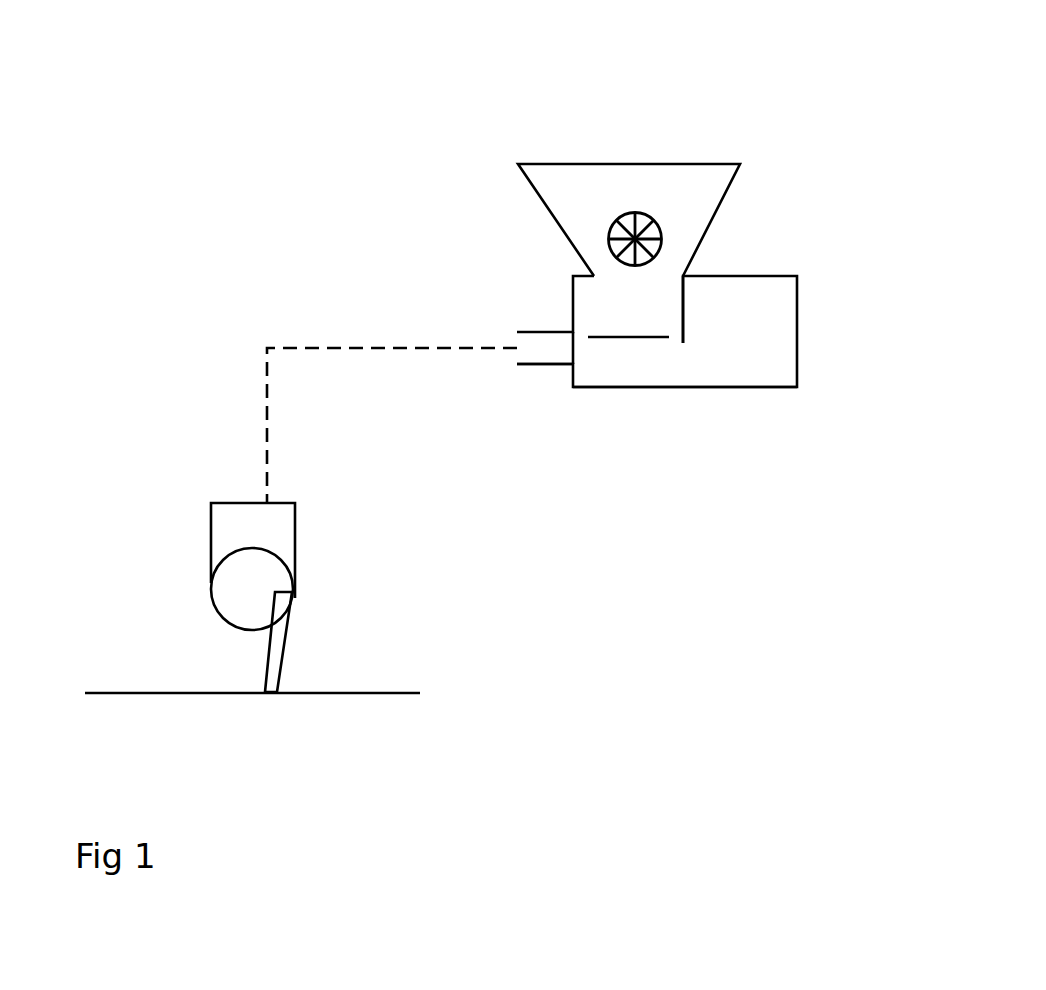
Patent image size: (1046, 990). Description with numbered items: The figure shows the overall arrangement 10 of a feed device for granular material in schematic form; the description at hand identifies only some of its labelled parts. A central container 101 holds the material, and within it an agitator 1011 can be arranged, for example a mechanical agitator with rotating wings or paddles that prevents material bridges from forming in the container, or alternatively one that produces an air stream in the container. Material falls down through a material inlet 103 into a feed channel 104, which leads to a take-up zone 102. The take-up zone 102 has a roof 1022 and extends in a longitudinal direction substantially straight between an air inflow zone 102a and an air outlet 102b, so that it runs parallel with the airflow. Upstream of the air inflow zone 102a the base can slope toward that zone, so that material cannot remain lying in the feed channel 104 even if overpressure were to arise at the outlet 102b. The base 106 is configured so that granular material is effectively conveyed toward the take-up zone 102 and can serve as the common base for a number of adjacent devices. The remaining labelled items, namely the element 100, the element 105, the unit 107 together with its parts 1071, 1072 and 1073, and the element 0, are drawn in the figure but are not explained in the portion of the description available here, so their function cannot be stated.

The toilet flushing device 10 is at (756, 99).
The housing 100 is at (525, 305).
The central container 101 is at (590, 195).
The agitator 1011 is at (659, 225).
The material inlet 103 is at (620, 282).
The feed channel 104 is at (768, 347).
The inlet channel lower wall 105 is at (528, 365).
The take-up zone 102 is at (645, 365).
The air inflow zone 102a is at (683, 365).
The air outlet 102b is at (572, 348).
The roof 1022 is at (602, 337).
The base 106 is at (267, 378).
The actuator unit 107 is at (140, 563).
The actuator housing 1071 is at (285, 503).
The roller 1072 is at (280, 557).
The lever 1073 is at (287, 622).
The floor 0 is at (173, 693).